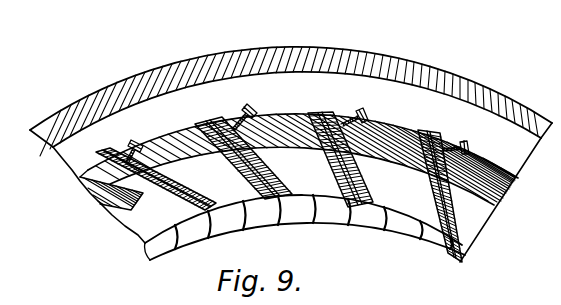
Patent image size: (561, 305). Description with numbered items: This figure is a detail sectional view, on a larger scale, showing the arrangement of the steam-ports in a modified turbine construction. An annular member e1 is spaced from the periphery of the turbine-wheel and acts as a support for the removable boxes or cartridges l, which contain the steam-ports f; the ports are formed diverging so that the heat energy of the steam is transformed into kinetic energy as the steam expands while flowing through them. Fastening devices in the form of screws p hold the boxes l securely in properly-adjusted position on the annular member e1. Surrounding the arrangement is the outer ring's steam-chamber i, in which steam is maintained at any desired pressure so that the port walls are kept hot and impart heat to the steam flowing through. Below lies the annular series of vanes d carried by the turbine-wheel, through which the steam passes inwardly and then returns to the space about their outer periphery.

The steam-chamber i is at (272, 80).
The annular series of vanes d is at (455, 247).
The annular member e1 is at (172, 150).
The removable boxes or cartridges l is at (440, 137).
The screws p is at (252, 168).
The steam-ports f is at (438, 200).